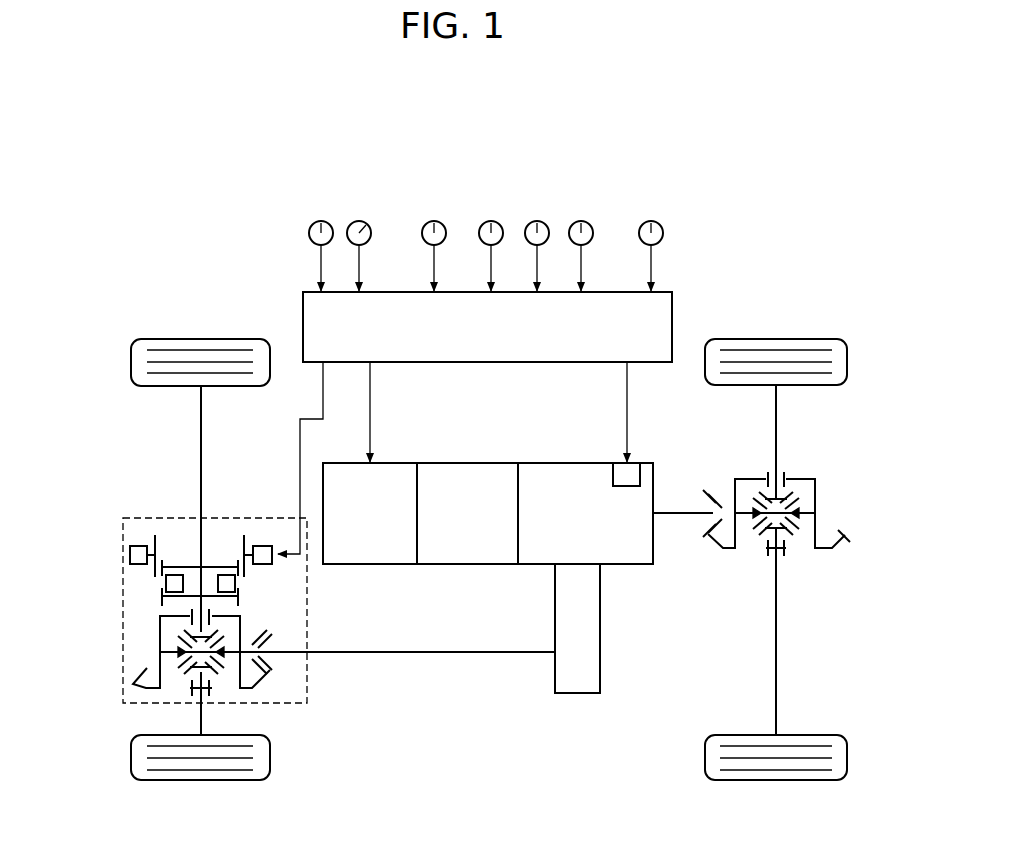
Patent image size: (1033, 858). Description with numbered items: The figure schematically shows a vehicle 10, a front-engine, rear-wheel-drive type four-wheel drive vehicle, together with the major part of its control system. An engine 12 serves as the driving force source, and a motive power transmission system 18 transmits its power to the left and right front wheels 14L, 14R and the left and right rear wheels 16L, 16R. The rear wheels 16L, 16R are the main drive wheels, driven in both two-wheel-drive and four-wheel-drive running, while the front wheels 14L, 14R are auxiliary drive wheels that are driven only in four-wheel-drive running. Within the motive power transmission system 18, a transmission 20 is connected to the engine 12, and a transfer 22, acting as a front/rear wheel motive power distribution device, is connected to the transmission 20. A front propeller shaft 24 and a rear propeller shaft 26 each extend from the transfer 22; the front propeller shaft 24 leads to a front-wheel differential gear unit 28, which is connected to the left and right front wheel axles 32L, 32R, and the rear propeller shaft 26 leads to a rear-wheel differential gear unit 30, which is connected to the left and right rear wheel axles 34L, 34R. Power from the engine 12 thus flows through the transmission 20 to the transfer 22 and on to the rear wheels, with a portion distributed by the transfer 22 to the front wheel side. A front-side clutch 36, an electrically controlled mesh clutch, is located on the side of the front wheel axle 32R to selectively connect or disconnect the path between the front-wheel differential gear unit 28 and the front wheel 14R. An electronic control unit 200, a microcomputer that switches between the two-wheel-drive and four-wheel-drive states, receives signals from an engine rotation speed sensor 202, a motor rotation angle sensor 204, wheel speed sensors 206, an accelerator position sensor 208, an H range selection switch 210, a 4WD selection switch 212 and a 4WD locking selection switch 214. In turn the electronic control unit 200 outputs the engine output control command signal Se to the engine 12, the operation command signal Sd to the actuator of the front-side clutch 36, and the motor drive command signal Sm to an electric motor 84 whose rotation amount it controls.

The vehicle 10 is at (730, 147).
The engine 12 is at (348, 472).
The right front wheel 14R is at (173, 345).
The left front wheel 14L is at (173, 775).
The right rear wheel 16R is at (760, 345).
The left rear wheel 16L is at (760, 775).
The motive power transmission system 18 is at (564, 742).
The transmission 20 is at (451, 472).
The transfer 22 is at (571, 472).
The front propeller shaft 24 is at (392, 656).
The rear propeller shaft 26 is at (676, 508).
The front-wheel differential gear unit 28 is at (121, 707).
The rear-wheel differential gear unit 30 is at (811, 561).
The right front wheel axle 32R is at (203, 442).
The left front wheel axle 32L is at (203, 720).
The right rear wheel axle 34R is at (778, 428).
The left rear wheel axle 34L is at (778, 687).
The front-side clutch 36 is at (150, 582).
The electric motor 84 is at (634, 466).
The electronic control unit 200 is at (466, 362).
The engine rotation speed sensor 202 is at (319, 220).
The motor rotation angle sensor 204 is at (361, 220).
The wheel speed sensors 206 is at (431, 220).
The accelerator position sensor 208 is at (489, 220).
The H range selection switch 210 is at (535, 220).
The 4WD selection switch 212 is at (579, 220).
The 4WD locking selection switch 214 is at (649, 220).